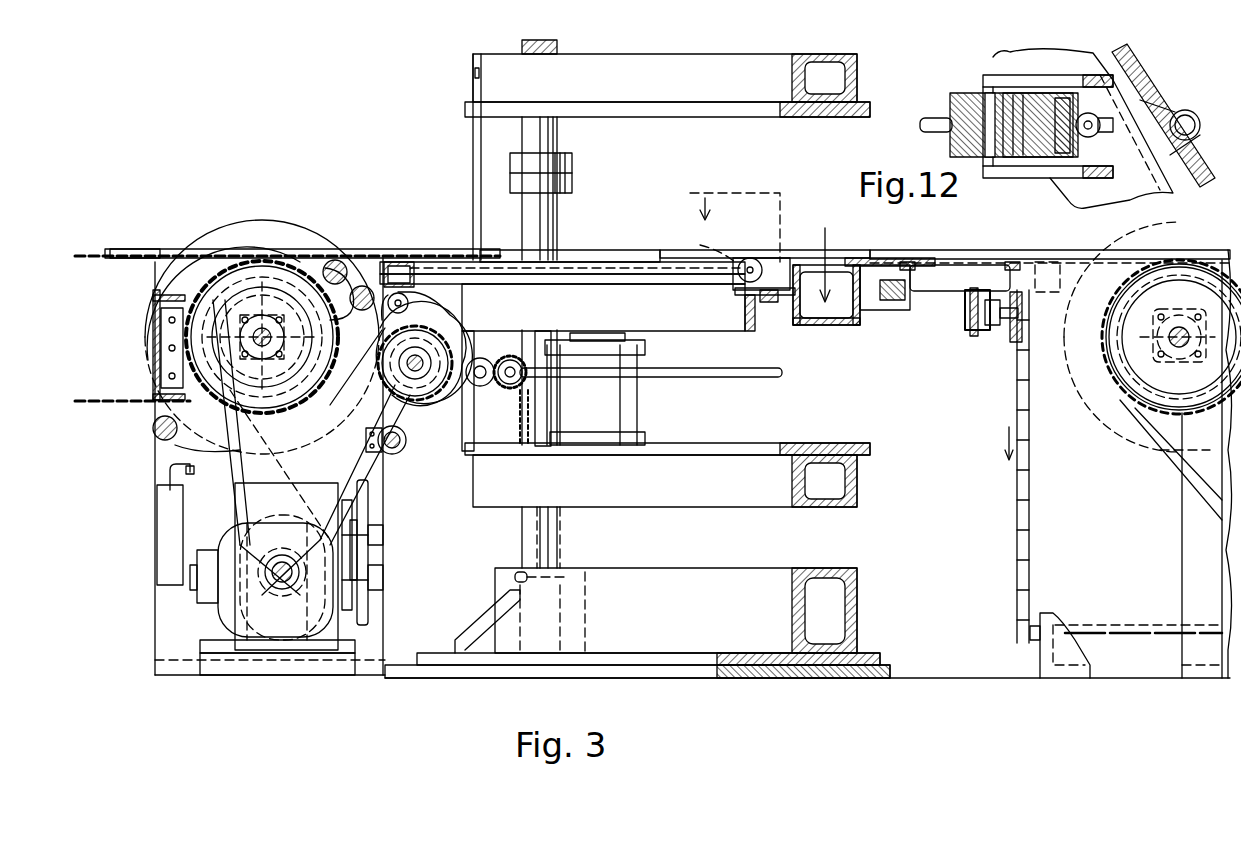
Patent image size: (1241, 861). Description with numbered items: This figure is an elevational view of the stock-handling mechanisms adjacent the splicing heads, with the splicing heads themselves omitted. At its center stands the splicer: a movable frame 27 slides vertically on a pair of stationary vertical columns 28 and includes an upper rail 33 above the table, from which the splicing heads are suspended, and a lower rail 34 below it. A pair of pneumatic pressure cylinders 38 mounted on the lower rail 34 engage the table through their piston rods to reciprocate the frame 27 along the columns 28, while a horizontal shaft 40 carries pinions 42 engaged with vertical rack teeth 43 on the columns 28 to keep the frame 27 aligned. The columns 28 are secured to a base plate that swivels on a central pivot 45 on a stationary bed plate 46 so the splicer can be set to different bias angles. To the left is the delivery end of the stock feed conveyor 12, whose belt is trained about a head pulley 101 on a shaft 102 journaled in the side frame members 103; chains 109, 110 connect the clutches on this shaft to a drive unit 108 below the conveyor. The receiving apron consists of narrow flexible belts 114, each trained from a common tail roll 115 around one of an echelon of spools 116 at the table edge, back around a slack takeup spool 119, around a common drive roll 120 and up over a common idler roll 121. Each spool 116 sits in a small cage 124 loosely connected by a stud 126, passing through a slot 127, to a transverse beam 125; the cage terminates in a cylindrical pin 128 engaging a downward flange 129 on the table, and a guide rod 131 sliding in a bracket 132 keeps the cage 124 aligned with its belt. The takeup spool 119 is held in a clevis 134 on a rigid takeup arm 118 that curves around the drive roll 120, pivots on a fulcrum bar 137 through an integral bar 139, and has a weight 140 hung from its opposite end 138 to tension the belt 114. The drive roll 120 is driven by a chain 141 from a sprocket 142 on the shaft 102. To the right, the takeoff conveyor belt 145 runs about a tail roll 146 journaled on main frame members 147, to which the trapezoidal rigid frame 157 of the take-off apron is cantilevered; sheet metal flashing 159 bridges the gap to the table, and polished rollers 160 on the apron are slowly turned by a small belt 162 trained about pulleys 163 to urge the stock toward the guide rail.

In FIG. 3, the stock feed conveyor 12 is at (95, 225).
In FIG. 3, the frame 27 is at (495, 128).
In FIG. 3, the vertical columns 28 is at (540, 137).
In FIG. 3, the upper rail 33 is at (690, 105).
In FIG. 3, the lower rail 34 is at (815, 445).
In FIG. 3, the pneumatic pressure cylinders 38 is at (625, 415).
In FIG. 3, the horizontal shaft 40 is at (651, 390).
In FIG. 3, the pinions 42 is at (515, 355).
In FIG. 3, the rack teeth 43 is at (535, 420).
In FIG. 3, the central pivot 45 is at (700, 658).
In FIG. 3, the bed plate 46 is at (760, 672).
In FIG. 3, the head pulley 101 is at (170, 288).
In FIG. 3, the shaft 102 is at (245, 335).
In FIG. 3, the side frame members 103 is at (120, 270).
In FIG. 3, the drive unit 108 is at (225, 615).
In FIG. 3, the chain 109 is at (225, 480).
In FIG. 3, the chain 110 is at (190, 470).
In FIG. 3, the belts 114 is at (565, 262).
In FIG. 12, the belts 114 is at (965, 95).
In FIG. 3, the tail roll 115 is at (330, 258).
In FIG. 3, the spools 116 is at (703, 240).
In FIG. 3, the takeup arm 118 is at (521, 377).
In FIG. 3, the slack takeup spool 119 is at (427, 303).
In FIG. 3, the drive roll 120 is at (418, 400).
In FIG. 3, the idler roll 121 is at (365, 232).
In FIG. 3, the cage 124 is at (742, 290).
In FIG. 12, the cage 124 is at (1030, 180).
In FIG. 3, the beam 125 is at (790, 320).
In FIG. 12, the beam 125 is at (1090, 190).
In FIG. 3, the stud 126 is at (775, 300).
In FIG. 12, the stud 126 is at (1092, 135).
In FIG. 12, the slot 127 is at (1080, 88).
In FIG. 12, the cylindrical pin 128 is at (1185, 118).
In FIG. 3, the flange 129 is at (768, 262).
In FIG. 12, the flange 129 is at (1130, 58).
In FIG. 3, the guide rod 131 is at (590, 275).
In FIG. 12, the guide rod 131 is at (950, 120).
In FIG. 3, the bracket 132 is at (425, 262).
In FIG. 3, the clevis 134 is at (416, 349).
In FIG. 3, the fulcrum bar 137 is at (340, 455).
In FIG. 3, the end of take-up arm 138 is at (190, 440).
In FIG. 3, the bar 139 is at (400, 452).
In FIG. 3, the weight 140 is at (165, 522).
In FIG. 3, the chain 141 is at (262, 337).
In FIG. 3, the sprocket 142 is at (320, 395).
In FIG. 3, the flexible belt 145 is at (1145, 400).
In FIG. 3, the tail roll 146 is at (1125, 385).
In FIG. 3, the main frame members 147 is at (1060, 275).
In FIG. 3, the rigid frame 157 is at (878, 300).
In FIG. 3, the sheet metal flashing 159 is at (920, 262).
In FIG. 3, the rollers 160 is at (935, 270).
In FIG. 3, the belt 162 is at (975, 325).
In FIG. 3, the pulleys 163 is at (970, 305).